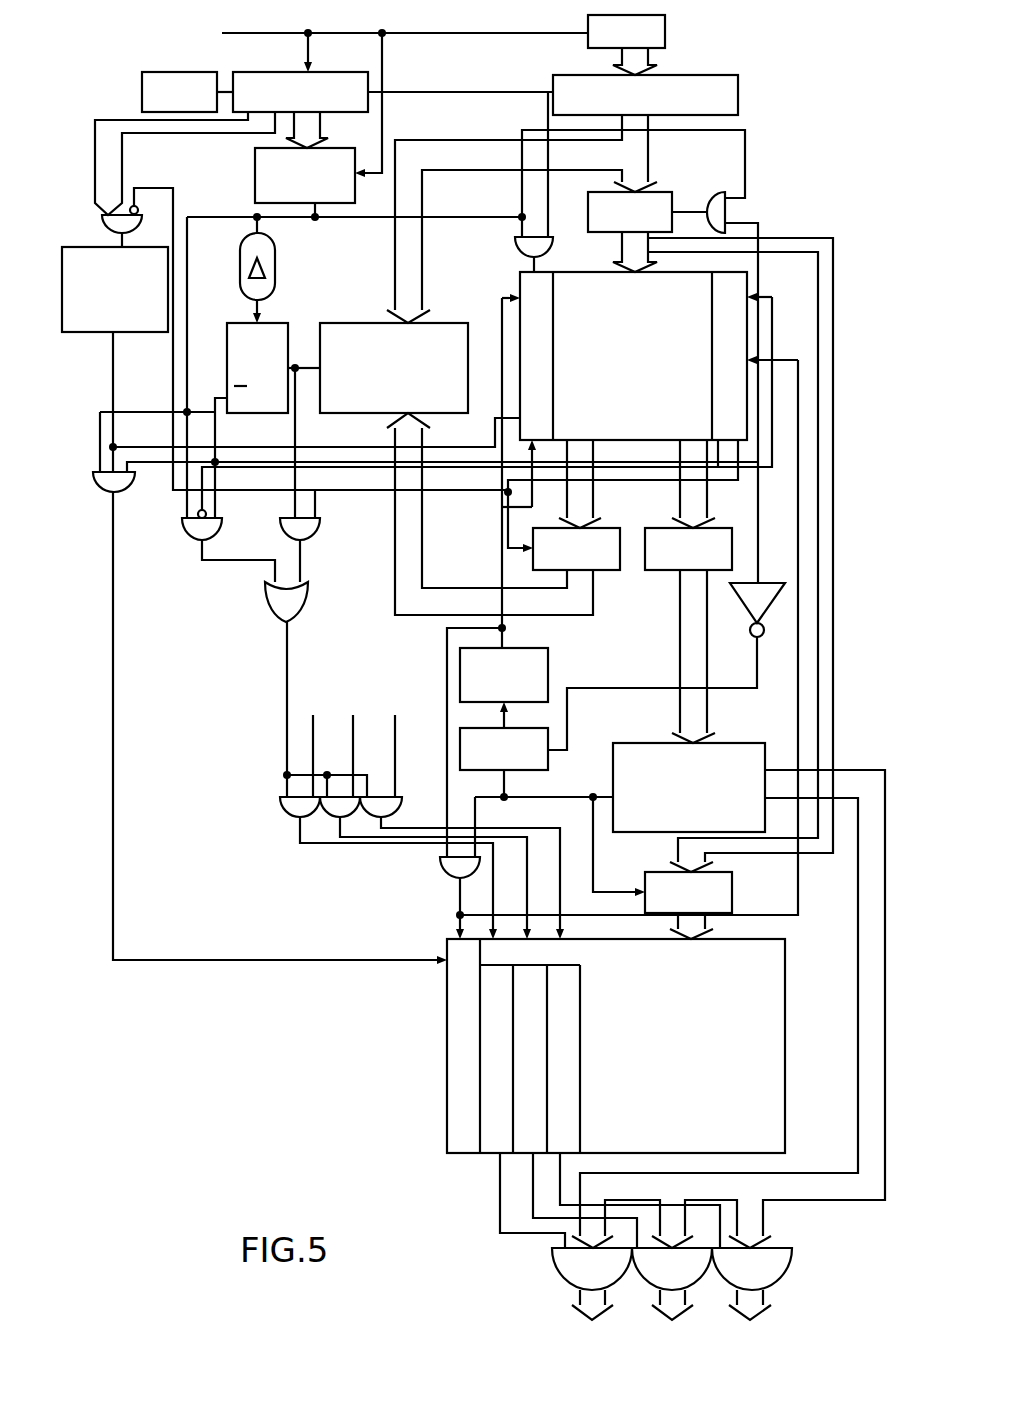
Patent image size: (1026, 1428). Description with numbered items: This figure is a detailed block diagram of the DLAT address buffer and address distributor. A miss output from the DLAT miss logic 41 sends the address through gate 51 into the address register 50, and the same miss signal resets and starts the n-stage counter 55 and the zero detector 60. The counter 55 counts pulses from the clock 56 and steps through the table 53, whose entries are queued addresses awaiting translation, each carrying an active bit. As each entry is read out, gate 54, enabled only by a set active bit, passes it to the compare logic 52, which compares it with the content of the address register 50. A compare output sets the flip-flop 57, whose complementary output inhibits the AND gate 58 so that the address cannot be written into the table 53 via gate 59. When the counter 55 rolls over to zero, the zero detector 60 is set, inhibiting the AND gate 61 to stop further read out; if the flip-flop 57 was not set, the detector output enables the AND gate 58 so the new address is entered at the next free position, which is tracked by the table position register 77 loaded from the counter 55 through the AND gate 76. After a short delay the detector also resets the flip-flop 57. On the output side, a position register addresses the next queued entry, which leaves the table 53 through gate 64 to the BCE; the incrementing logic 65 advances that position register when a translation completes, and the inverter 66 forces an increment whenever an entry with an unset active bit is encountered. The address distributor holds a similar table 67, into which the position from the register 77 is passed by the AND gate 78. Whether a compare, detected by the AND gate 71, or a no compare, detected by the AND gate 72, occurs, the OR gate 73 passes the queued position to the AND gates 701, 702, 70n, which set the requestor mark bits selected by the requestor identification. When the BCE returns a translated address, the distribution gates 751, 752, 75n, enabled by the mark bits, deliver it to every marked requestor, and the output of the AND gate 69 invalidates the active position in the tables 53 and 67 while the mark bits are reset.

The DLAT miss logic 41 is at (361, 114).
The address register 50 is at (738, 100).
The gate 51 is at (665, 45).
The compare logic 52 is at (468, 366).
The table 53 is at (598, 272).
The gate 54 is at (600, 528).
The n-stage counter 55 is at (276, 72).
The clock 56 is at (204, 72).
The flip-flop 57 is at (288, 323).
The AND gate 58 is at (718, 193).
The gate 59 is at (588, 205).
The zero detector 60 is at (255, 168).
The AND gate 61 is at (514, 242).
The gate 64 is at (646, 570).
The incrementing logic 65 is at (548, 768).
The inverter 66 is at (746, 610).
The table 67 is at (788, 968).
The AND gate 69 is at (435, 898).
The AND gate 701 is at (280, 804).
The AND gate 702 is at (332, 820).
The AND gate 70n is at (400, 800).
The AND gate 71 is at (322, 532).
The AND gate 72 is at (222, 532).
The OR gate 73 is at (306, 600).
The distribution gate 751 is at (552, 1266).
The distribution gate 752 is at (644, 1295).
The distribution gate 75n is at (792, 1262).
The AND gate 76 is at (102, 221).
The table position register 77 is at (84, 252).
The AND gate 78 is at (94, 494).